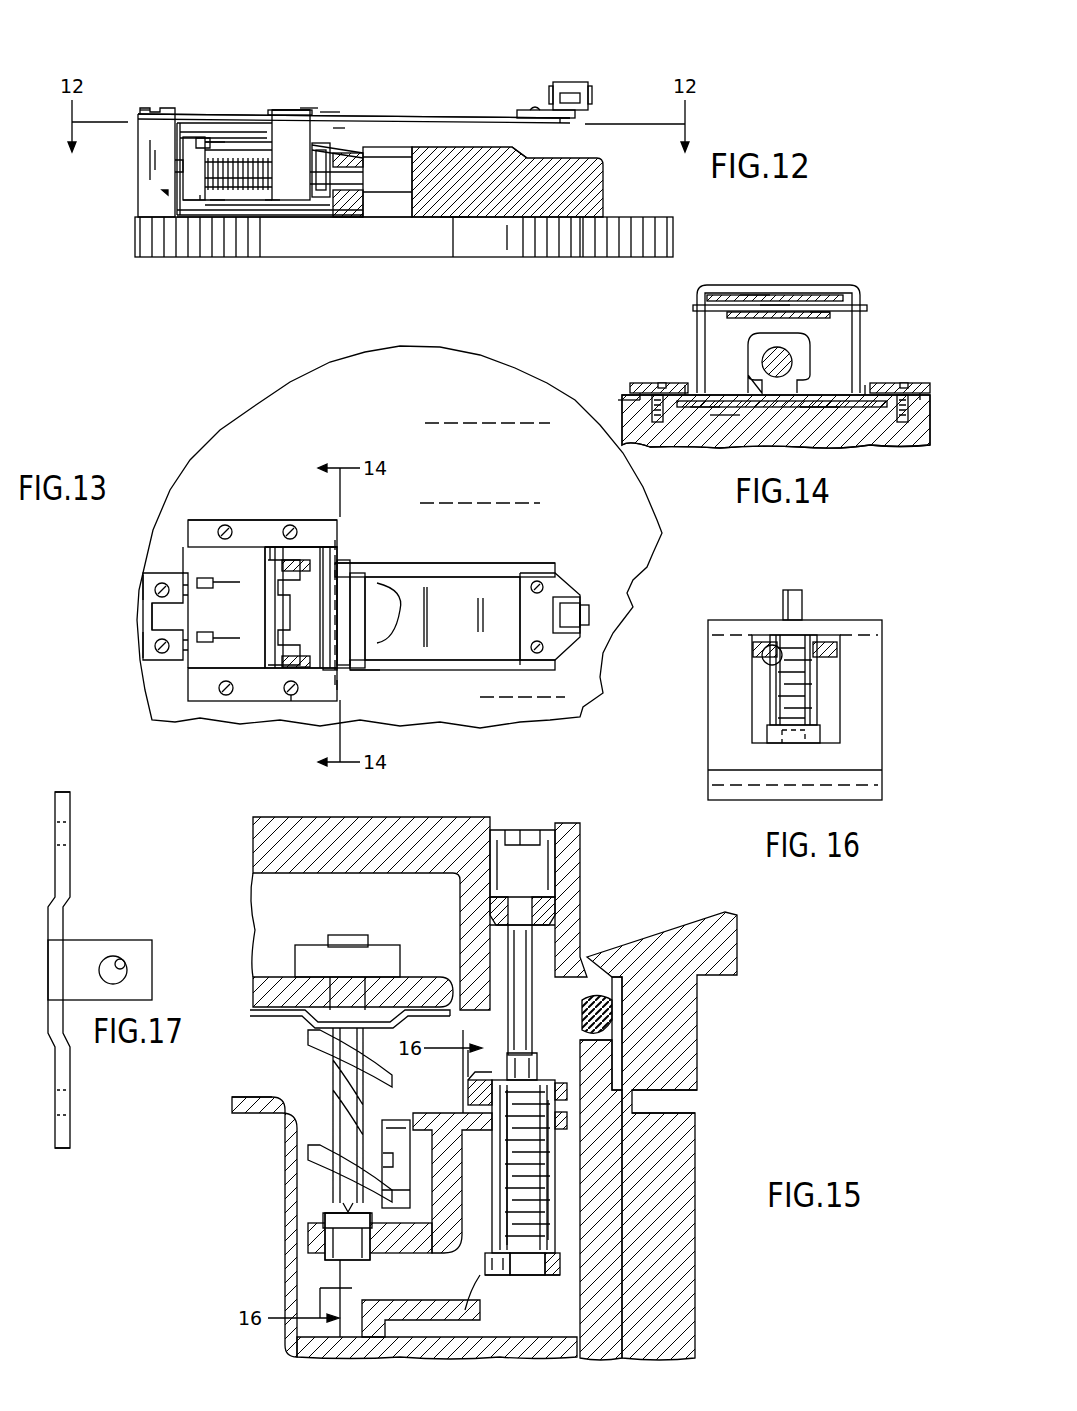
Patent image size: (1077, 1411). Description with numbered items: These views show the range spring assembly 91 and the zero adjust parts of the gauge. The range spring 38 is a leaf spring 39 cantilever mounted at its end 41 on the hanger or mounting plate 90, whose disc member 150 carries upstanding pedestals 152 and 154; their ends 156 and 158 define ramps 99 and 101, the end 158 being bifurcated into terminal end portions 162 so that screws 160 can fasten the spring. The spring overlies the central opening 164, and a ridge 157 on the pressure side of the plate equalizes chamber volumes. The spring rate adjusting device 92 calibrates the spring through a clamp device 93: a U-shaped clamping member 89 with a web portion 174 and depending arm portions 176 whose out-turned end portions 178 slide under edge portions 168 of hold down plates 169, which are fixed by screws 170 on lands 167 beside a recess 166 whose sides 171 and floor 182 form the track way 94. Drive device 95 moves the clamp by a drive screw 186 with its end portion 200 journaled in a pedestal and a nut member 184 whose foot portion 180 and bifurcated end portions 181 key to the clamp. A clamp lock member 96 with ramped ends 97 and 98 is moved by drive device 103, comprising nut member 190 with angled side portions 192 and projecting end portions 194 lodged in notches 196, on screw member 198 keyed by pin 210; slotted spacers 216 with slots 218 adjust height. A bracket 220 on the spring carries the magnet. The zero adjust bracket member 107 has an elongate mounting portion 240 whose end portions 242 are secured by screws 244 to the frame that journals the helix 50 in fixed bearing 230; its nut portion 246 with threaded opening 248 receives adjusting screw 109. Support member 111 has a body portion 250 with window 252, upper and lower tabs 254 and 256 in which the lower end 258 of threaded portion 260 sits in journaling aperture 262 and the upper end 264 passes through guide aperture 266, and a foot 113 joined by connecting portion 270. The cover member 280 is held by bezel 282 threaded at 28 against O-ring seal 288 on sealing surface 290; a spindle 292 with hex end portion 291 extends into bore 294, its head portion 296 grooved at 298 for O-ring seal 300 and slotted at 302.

In FIG. 15, the threaded connection location 28 is at (650, 1057).
In FIG. 12, the range spring 38 is at (520, 110).
In FIG. 12, the leaf spring 39 is at (470, 118).
In FIG. 14, the leaf spring 39 is at (760, 290).
In FIG. 13, the leaf spring 39 is at (520, 578).
In FIG. 12, the end of leaf spring 41 is at (185, 122).
In FIG. 15, the single lobe helix 50 is at (318, 1078).
In FIG. 12, the U-shaped clamping member 89 is at (305, 110).
In FIG. 14, the U-shaped clamping member 89 is at (795, 312).
In FIG. 13, the U-shaped clamping member 89 is at (295, 697).
In FIG. 12, the hanger or mounting plate 90 is at (640, 222).
In FIG. 13, the hanger or mounting plate 90 is at (480, 372).
In FIG. 12, the range spring assembly 91 is at (732, 133).
In FIG. 13, the range spring assembly 91 is at (165, 447).
In FIG. 12, the spring rate adjusting device 92 is at (272, 90).
In FIG. 13, the spring rate adjusting device 92 is at (428, 485).
In FIG. 12, the clamp device 93 is at (318, 110).
In FIG. 14, the clamp device 93 is at (776, 285).
In FIG. 13, the clamp device 93 is at (318, 550).
In FIG. 12, the track way 94 is at (236, 212).
In FIG. 14, the track way 94 is at (720, 415).
In FIG. 13, the track way 94 is at (190, 550).
In FIG. 12, the drive device 95 is at (247, 160).
In FIG. 12, the clamp lock member 96 is at (228, 140).
In FIG. 14, the clamp lock member 96 is at (820, 312).
In FIG. 13, the clamp lock member 96 is at (268, 555).
In FIG. 13, the ramped end 97 is at (365, 672).
In FIG. 13, the ramped end 98 is at (152, 617).
In FIG. 12, the ramp 99 is at (332, 155).
In FIG. 13, the ramp 99 is at (358, 580).
In FIG. 13, the ramp 101 is at (150, 632).
In FIG. 12, the drive device 103 is at (215, 208).
In FIG. 16, the bracket member 107 is at (762, 630).
In FIG. 17, the bracket member 107 is at (95, 1073).
In FIG. 15, the bracket member 107 is at (572, 1121).
In FIG. 16, the adjusting screw 109 is at (800, 638).
In FIG. 15, the adjusting screw 109 is at (565, 1182).
In FIG. 15, the support member 111 is at (500, 1285).
In FIG. 15, the foot 113 is at (372, 1320).
In FIG. 12, the disc member 150 is at (588, 245).
In FIG. 13, the disc member 150 is at (405, 360).
In FIG. 12, the pedestal 152 is at (455, 217).
In FIG. 13, the pedestal 152 is at (412, 580).
In FIG. 12, the pedestal 154 is at (140, 185).
In FIG. 12, the upstanding end 156 is at (365, 157).
In FIG. 12, the ridge 157 is at (600, 163).
In FIG. 13, the ridge 157 is at (550, 578).
In FIG. 12, the upstanding end 158 is at (140, 150).
In FIG. 12, the screws 160 is at (145, 107).
In FIG. 13, the screws 160 is at (160, 587).
In FIG. 13, the terminal end portions 162 is at (143, 578).
In FIG. 12, the central opening 164 is at (510, 150).
In FIG. 13, the central opening 164 is at (465, 577).
In FIG. 14, the quadrilateral recess 166 is at (776, 421).
In FIG. 12, the lands 167 is at (192, 207).
In FIG. 14, the edge portions 168 is at (675, 383).
In FIG. 13, the edge portions 168 is at (262, 555).
In FIG. 12, the hold down plates 169 is at (272, 208).
In FIG. 14, the hold down plates 169 is at (645, 395).
In FIG. 13, the hold down plates 169 is at (280, 560).
In FIG. 14, the screws 170 is at (625, 400).
In FIG. 13, the screws 170 is at (225, 526).
In FIG. 14, the sides of recess 171 is at (658, 385).
In FIG. 12, the planar web portion 174 is at (330, 115).
In FIG. 14, the planar web portion 174 is at (762, 303).
In FIG. 12, the depending arm portions 176 is at (288, 130).
In FIG. 14, the depending arm portions 176 is at (697, 315).
In FIG. 13, the depending arm portions 176 is at (306, 575).
In FIG. 14, the out-turned end portion 178 is at (700, 410).
In FIG. 13, the out-turned end portion 178 is at (302, 560).
In FIG. 14, the foot portion 180 is at (820, 408).
In FIG. 13, the foot portion 180 is at (275, 580).
In FIG. 14, the bifurcated end portions 181 is at (880, 420).
In FIG. 13, the bifurcated end portions 181 is at (280, 700).
In FIG. 14, the floor of recess 182 is at (785, 400).
In FIG. 12, the nut member 184 is at (350, 208).
In FIG. 14, the nut member 184 is at (752, 335).
In FIG. 12, the drive screw 186 is at (440, 192).
In FIG. 14, the drive screw 186 is at (790, 355).
In FIG. 12, the nut member 190 is at (192, 175).
In FIG. 12, the angled side portions 192 is at (205, 200).
In FIG. 12, the upwardly projecting end portions 194 is at (200, 138).
In FIG. 13, the upwardly projecting end portions 194 is at (205, 575).
In FIG. 12, the notches 196 is at (218, 140).
In FIG. 13, the notches 196 is at (240, 580).
In FIG. 12, the screw member 198 is at (178, 165).
In FIG. 12, the end portion 200 is at (380, 185).
In FIG. 12, the pin 210 is at (165, 192).
In FIG. 12, the spacers 216 is at (340, 130).
In FIG. 13, the spacers 216 is at (245, 672).
In FIG. 13, the slots 218 is at (300, 655).
In FIG. 12, the bracket 220 is at (590, 84).
In FIG. 13, the bracket 220 is at (575, 603).
In FIG. 15, the fixed bearing 230 is at (330, 1245).
In FIG. 17, the elongate mounting portion 240 is at (65, 880).
In FIG. 17, the end portions 242 is at (58, 800).
In FIG. 15, the screws 244 is at (385, 1128).
In FIG. 16, the nut portion 246 is at (820, 645).
In FIG. 17, the nut portion 246 is at (148, 972).
In FIG. 15, the nut portion 246 is at (445, 1112).
In FIG. 16, the threaded opening 248 is at (762, 665).
In FIG. 17, the threaded opening 248 is at (122, 962).
In FIG. 16, the body portion 250 is at (725, 752).
In FIG. 15, the body portion 250 is at (515, 1158).
In FIG. 16, the window 252 is at (752, 690).
In FIG. 15, the window 252 is at (462, 1238).
In FIG. 15, the upper tab 254 is at (600, 1095).
In FIG. 16, the lower tab 256 is at (822, 735).
In FIG. 15, the lower tab 256 is at (560, 1265).
In FIG. 15, the lower end 258 is at (525, 1260).
In FIG. 15, the threaded portion 260 is at (555, 1218).
In FIG. 15, the journaling aperture 262 is at (540, 1280).
In FIG. 15, the upper end 264 is at (650, 1100).
In FIG. 15, the guide aperture 266 is at (560, 1040).
In FIG. 15, the connecting portion 270 is at (470, 1320).
In FIG. 15, the cover member 280 is at (370, 830).
In FIG. 15, the bezel 282 is at (700, 920).
In FIG. 15, the O-ring seal 288 is at (620, 1008).
In FIG. 15, the sealing surface 290 is at (615, 995).
In FIG. 15, the hex shaped end portion 291 is at (535, 1060).
In FIG. 15, the spindle 292 is at (512, 968).
In FIG. 15, the cylindrical bore 294 is at (500, 830).
In FIG. 15, the head portion 296 is at (545, 860).
In FIG. 15, the groove 298 is at (535, 900).
In FIG. 15, the O-ring seal 300 is at (492, 912).
In FIG. 15, the slot 302 is at (522, 832).